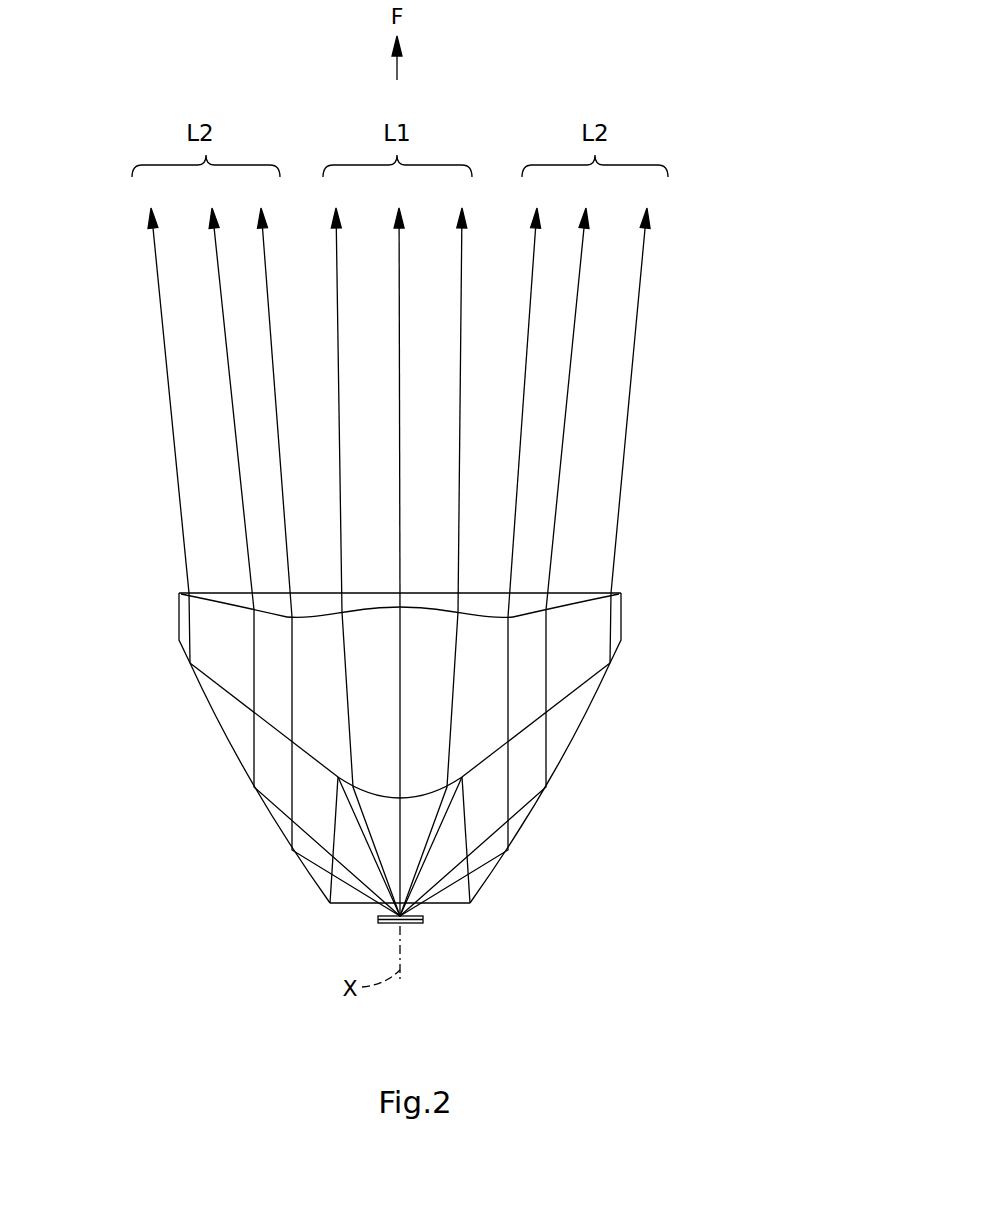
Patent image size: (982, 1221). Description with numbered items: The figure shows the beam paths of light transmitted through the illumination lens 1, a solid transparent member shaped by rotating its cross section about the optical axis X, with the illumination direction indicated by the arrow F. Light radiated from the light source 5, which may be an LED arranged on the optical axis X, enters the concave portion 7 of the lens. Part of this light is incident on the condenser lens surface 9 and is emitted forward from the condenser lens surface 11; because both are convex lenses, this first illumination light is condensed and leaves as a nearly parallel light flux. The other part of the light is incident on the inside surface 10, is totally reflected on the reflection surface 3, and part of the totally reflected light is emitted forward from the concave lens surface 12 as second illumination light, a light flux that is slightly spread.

The illumination lens 1 is at (374, 745).
The reflection surface 3 is at (226, 735).
The light source 5 is at (415, 922).
The concave portion 7 is at (455, 897).
The condenser lens surface 9 is at (374, 797).
The inside surface 10 is at (331, 890).
The condenser lens surface 11 is at (370, 608).
The concave lens surface 12 is at (228, 605).